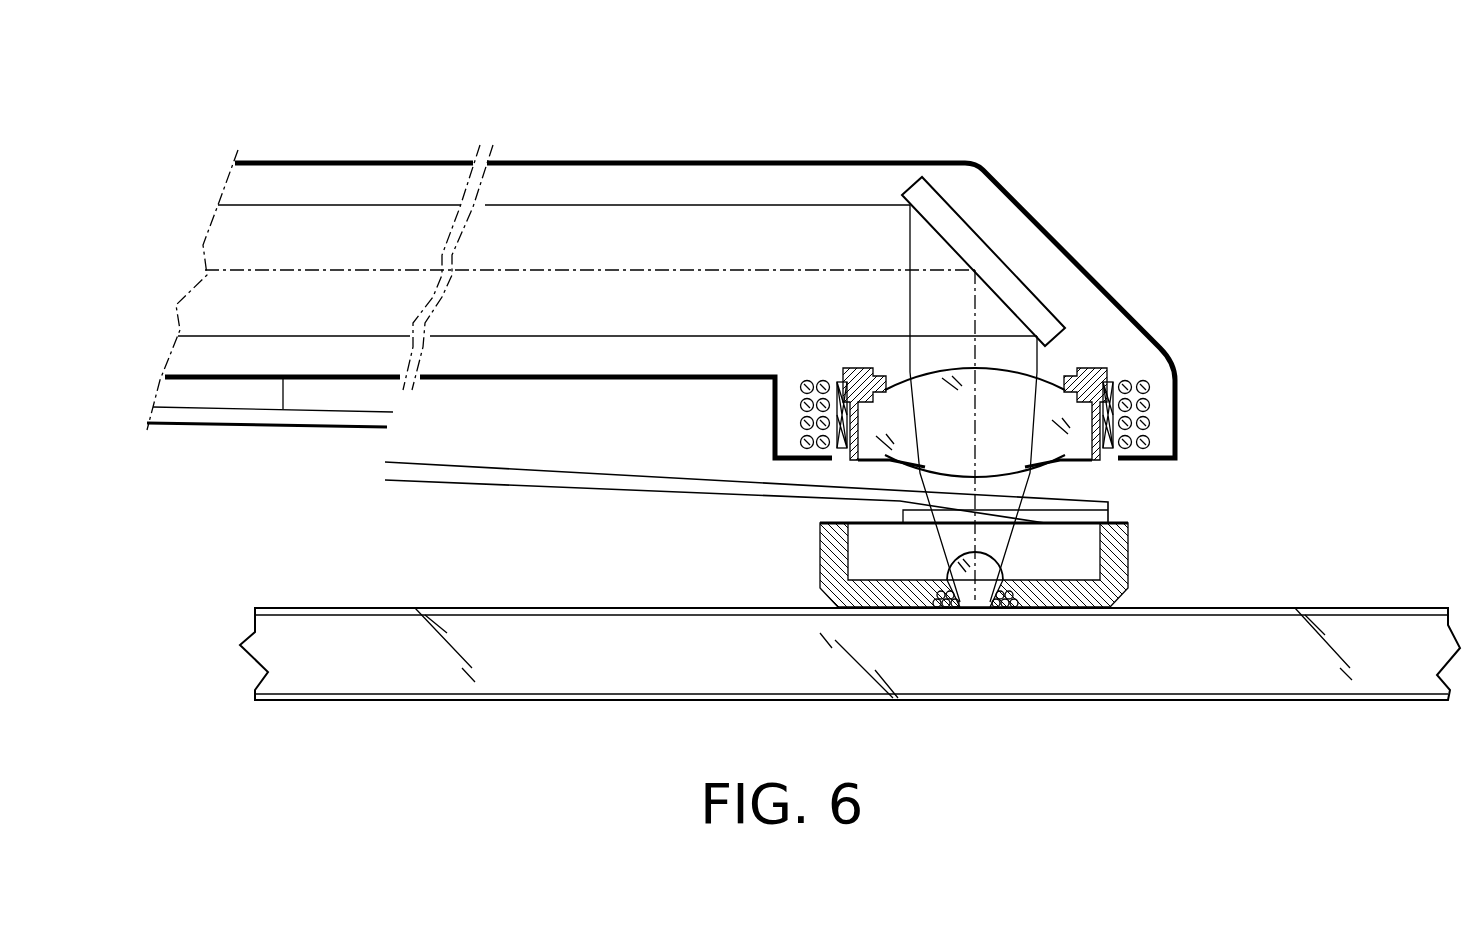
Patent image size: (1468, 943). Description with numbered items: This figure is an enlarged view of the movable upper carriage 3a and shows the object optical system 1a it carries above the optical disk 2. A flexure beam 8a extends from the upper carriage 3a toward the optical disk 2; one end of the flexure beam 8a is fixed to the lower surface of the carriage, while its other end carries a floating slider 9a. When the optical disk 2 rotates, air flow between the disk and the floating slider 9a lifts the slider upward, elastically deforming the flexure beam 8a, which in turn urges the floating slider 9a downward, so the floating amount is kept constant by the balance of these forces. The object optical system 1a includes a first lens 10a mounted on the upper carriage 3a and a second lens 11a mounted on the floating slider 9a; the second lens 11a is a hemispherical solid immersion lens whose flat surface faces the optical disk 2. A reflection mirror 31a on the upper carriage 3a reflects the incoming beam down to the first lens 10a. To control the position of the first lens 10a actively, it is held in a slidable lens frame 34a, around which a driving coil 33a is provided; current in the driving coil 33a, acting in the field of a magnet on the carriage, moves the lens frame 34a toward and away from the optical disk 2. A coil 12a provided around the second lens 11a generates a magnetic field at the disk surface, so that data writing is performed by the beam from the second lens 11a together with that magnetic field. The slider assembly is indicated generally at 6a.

The upper carriage 3a is at (1050, 170).
The reflection mirror 31a is at (1020, 293).
The object optical system 1a is at (1175, 255).
The first lens 10a is at (1045, 383).
The lens frame 34a is at (1105, 372).
The driving coil 33a is at (1147, 420).
The flexure beam 8a is at (328, 418).
The slider assembly 6a is at (1158, 545).
The floating slider 9a is at (828, 567).
The second lens 11a is at (1002, 572).
The coil 12a is at (1018, 596).
The optical disk 2 is at (1357, 607).